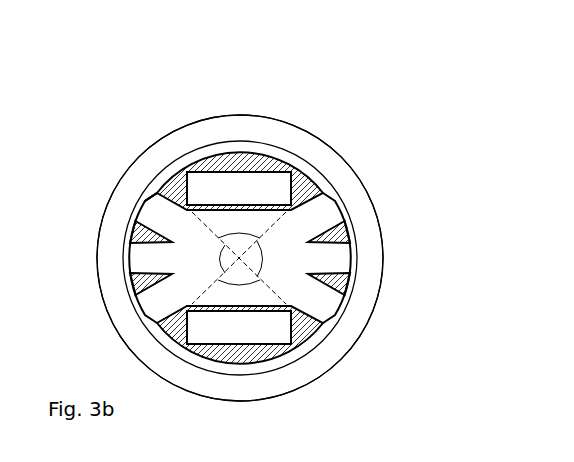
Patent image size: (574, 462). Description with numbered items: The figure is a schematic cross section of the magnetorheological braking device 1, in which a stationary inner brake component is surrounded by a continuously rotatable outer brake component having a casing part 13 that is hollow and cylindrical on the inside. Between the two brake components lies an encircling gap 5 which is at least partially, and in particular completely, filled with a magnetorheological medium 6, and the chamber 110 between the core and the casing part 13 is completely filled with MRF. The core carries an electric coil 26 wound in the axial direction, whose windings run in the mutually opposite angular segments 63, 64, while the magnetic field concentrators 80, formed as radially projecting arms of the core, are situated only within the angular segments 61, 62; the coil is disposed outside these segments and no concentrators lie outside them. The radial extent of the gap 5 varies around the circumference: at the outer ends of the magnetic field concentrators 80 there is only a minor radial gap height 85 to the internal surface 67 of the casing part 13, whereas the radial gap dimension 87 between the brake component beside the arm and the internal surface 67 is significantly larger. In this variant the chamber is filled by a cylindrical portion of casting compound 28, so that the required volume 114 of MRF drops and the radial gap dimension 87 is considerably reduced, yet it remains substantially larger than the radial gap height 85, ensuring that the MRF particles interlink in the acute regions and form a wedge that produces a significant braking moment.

The magnetorheological braking device 1 is at (91, 185).
The gap 5 is at (316, 172).
The magnetorheological medium 6 is at (186, 352).
The casing part 13 is at (368, 256).
The electric coil 26 is at (217, 187).
The casting compound 28 is at (258, 155).
The angular segment 61 is at (220, 264).
The angular segment 62 is at (261, 266).
The angular segment 63 is at (238, 236).
The angular segment 64 is at (236, 286).
The internal surface 67 is at (359, 302).
The magnetic field concentrators 80 is at (327, 310).
The radial gap height 85 is at (350, 196).
The radial gap dimension 87 is at (356, 227).
The chamber 110 is at (156, 183).
The required volume 114 is at (156, 183).